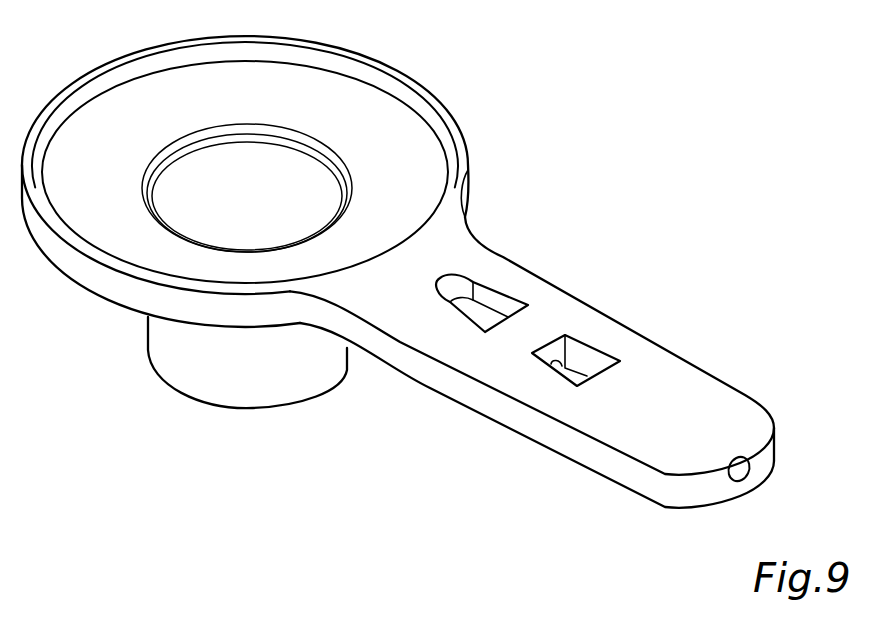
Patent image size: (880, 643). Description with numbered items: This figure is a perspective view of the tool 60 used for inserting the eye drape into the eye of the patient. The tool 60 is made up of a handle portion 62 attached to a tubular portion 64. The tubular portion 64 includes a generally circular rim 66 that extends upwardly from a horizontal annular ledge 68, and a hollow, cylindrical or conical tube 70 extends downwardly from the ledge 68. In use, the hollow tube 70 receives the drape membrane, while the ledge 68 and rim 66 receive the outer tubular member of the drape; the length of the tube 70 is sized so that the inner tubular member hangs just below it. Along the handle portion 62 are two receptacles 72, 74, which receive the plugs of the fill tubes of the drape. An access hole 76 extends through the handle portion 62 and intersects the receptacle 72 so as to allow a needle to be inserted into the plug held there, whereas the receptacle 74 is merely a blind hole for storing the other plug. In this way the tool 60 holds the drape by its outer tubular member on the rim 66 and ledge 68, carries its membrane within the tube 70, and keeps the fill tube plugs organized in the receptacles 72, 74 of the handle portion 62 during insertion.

The tool 60 is at (407, 281).
The handle portion 62 is at (680, 357).
The tubular portion 64 is at (453, 120).
The circular rim 66 is at (426, 112).
The horizontal annular ledge 68 is at (388, 130).
The hollow tube 70 is at (283, 408).
The receptacle 72 is at (575, 335).
The receptacle 74 is at (485, 282).
The access hole 76 is at (733, 480).